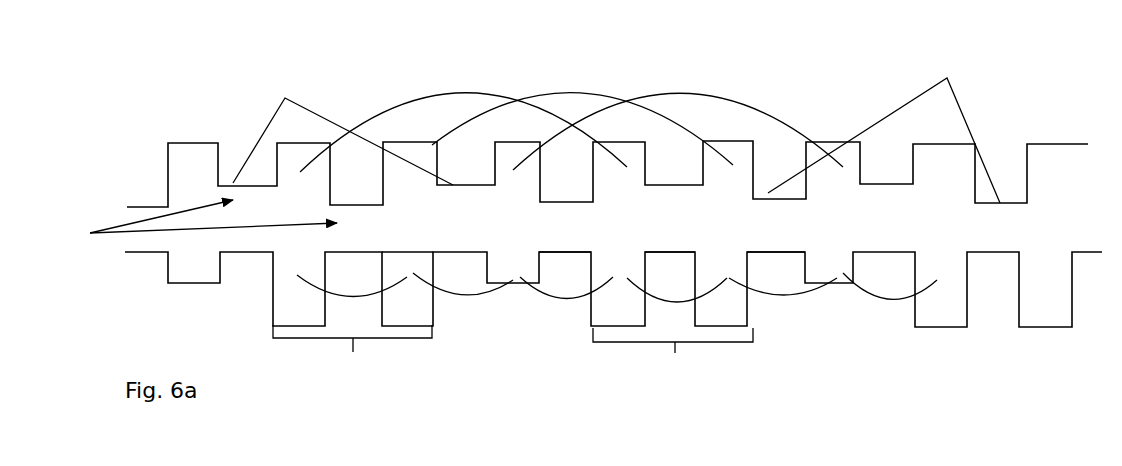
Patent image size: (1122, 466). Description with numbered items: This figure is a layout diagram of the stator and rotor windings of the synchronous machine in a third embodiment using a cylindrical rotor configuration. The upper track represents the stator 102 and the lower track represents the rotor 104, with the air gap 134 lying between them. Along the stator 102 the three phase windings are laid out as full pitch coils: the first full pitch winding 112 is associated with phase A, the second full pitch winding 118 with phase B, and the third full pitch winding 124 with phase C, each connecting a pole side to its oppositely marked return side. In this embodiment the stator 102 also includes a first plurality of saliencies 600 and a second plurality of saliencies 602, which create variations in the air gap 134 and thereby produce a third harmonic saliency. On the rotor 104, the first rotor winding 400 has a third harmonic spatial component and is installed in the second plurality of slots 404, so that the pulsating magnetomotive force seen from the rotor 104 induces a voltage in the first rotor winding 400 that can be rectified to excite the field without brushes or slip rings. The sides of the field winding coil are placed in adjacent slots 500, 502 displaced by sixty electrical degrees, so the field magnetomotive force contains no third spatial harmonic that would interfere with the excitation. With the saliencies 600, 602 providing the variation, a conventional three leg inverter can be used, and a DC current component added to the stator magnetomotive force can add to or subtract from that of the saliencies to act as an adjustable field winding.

The stator 102 is at (157, 203).
The rotor 104 is at (157, 263).
The air gap 134 is at (193, 224).
The first full pitch winding 112 is at (453, 95).
The third full pitch winding 124 is at (560, 92).
The second full pitch winding 118 is at (725, 97).
The first plurality of saliencies 600 is at (343, 127).
The second plurality of saliencies 602 is at (884, 125).
The second plurality of slots 404 is at (583, 253).
The first rotor winding 400 is at (452, 292).
The adjacent slot 500 is at (352, 351).
The adjacent slot 502 is at (673, 355).